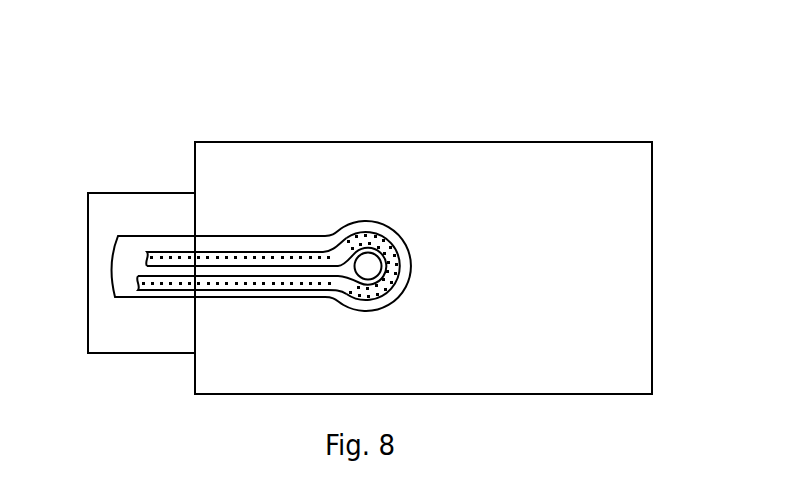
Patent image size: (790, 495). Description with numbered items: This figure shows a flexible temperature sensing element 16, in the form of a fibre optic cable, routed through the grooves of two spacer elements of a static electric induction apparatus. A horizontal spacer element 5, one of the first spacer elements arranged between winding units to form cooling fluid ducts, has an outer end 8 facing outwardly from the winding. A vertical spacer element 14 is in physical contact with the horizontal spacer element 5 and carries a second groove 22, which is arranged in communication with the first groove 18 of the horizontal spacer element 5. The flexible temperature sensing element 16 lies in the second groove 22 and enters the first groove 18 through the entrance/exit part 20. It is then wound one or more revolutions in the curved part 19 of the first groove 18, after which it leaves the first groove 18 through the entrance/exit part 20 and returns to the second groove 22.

The horizontal spacer element 5 is at (392, 142).
The outer end 8 is at (223, 157).
The vertical spacer element 14 is at (120, 327).
The flexible temperature sensing element 16 is at (298, 255).
The first groove 18 is at (243, 237).
The curved part 19 is at (383, 228).
The entrance/exit part 20 is at (197, 265).
The second groove 22 is at (130, 250).